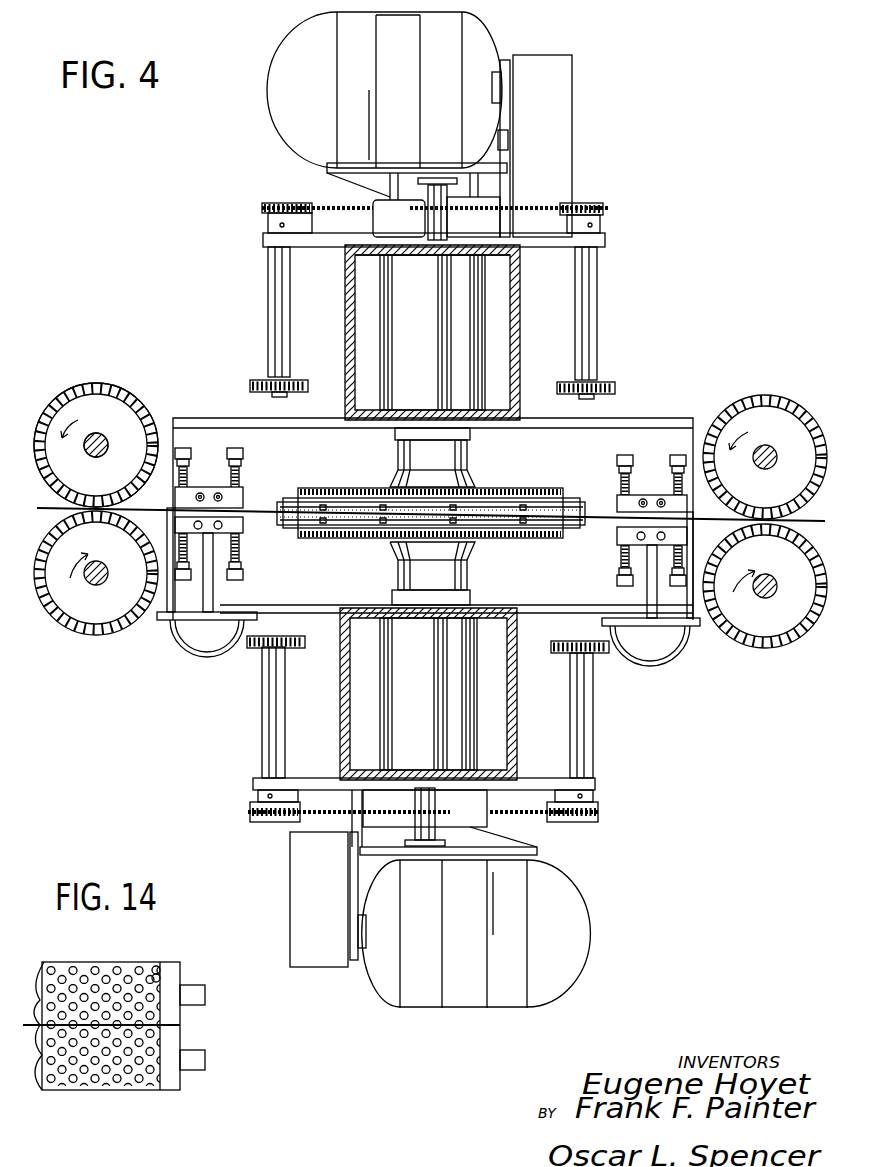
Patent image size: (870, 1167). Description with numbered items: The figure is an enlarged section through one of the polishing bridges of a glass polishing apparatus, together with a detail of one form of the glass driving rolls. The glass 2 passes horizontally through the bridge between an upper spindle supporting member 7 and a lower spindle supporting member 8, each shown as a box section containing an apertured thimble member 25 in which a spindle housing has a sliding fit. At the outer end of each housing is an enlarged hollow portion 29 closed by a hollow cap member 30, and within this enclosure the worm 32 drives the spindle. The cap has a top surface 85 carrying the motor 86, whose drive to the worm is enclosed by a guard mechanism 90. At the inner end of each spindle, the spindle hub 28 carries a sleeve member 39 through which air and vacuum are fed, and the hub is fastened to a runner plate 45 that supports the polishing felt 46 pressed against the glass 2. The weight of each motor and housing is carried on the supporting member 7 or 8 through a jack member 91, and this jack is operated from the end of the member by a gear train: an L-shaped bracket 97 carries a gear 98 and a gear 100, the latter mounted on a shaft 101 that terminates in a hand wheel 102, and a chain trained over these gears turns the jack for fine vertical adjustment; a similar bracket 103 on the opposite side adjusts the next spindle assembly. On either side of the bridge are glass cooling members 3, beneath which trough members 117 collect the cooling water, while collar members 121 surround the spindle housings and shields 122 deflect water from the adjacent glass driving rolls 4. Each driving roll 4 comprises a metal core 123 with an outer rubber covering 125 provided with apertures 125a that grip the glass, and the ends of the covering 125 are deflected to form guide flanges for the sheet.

In FIG. 4, the glass 2 is at (258, 508).
In FIG. 4, the glass cooling member 3 is at (197, 462).
In FIG. 4, the glass driving roll 4 is at (95, 383).
In FIG. 14, the glass driving roll 4 is at (48, 962).
In FIG. 4, the spindle supporting member 7 is at (520, 345).
In FIG. 4, the spindle supporting member 8 is at (518, 705).
In FIG. 4, the thimble member 25 is at (400, 344).
In FIG. 4, the spindle hub 28 is at (392, 480).
In FIG. 4, the enlarged hollow portion 29 is at (375, 230).
In FIG. 4, the hollow cap member 30 is at (322, 168).
In FIG. 4, the worm 32 is at (494, 252).
In FIG. 4, the sleeve member 39 is at (398, 445).
In FIG. 4, the runner plate 45 is at (483, 490).
In FIG. 4, the polishing felt 46 is at (508, 506).
In FIG. 4, the top surface 85 is at (398, 160).
In FIG. 4, the motor 86 is at (283, 66).
In FIG. 4, the guard mechanism 90 is at (560, 108).
In FIG. 4, the jack member 91 is at (430, 226).
In FIG. 4, the L-shaped bracket 97 is at (548, 243).
In FIG. 4, the gear 98 is at (300, 203).
In FIG. 4, the gear 100 is at (262, 208).
In FIG. 4, the shaft 101 is at (270, 310).
In FIG. 4, the hand wheel 102 is at (260, 380).
In FIG. 4, the bracket 103 is at (326, 240).
In FIG. 4, the trough member 117 is at (175, 660).
In FIG. 4, the collar member 121 is at (600, 425).
In FIG. 4, the shield 122 is at (160, 620).
In FIG. 4, the metal core 123 is at (112, 437).
In FIG. 4, the rubber covering 125 is at (110, 384).
In FIG. 14, the rubber covering 125 is at (108, 961).
In FIG. 14, the apertures 125a is at (158, 978).